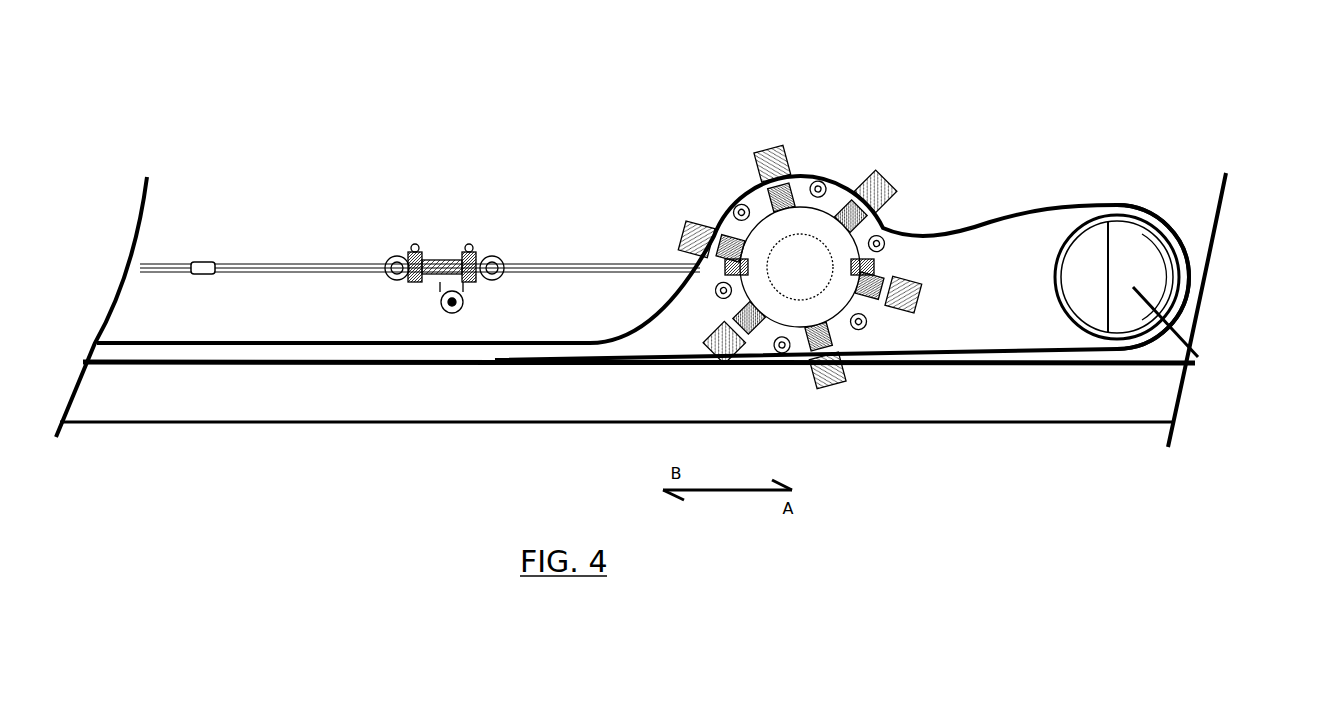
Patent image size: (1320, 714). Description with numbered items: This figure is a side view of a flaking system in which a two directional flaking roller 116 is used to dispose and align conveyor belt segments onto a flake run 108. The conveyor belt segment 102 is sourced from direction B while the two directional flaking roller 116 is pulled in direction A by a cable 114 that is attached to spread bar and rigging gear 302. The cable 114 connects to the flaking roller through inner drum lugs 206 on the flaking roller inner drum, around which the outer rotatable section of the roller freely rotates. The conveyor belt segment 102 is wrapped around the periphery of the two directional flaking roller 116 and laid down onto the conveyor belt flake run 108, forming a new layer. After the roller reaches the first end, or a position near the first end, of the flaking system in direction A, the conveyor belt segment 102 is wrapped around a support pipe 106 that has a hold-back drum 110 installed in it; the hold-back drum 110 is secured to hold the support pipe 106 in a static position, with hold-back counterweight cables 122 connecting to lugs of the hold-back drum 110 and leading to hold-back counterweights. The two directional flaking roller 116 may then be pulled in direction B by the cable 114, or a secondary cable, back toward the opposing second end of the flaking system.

The conveyor belt segment 102 is at (207, 343).
The support pipe 106 is at (1105, 208).
The flake run 108 is at (395, 406).
The hold-back drum 110 is at (1158, 207).
The cable 114 is at (152, 263).
The two directional flaking roller 116 is at (805, 175).
The hold-back counterweight cables 122 is at (1180, 330).
The inner drum lugs 206 is at (720, 207).
The spread bar and rigging gear 302 is at (630, 263).